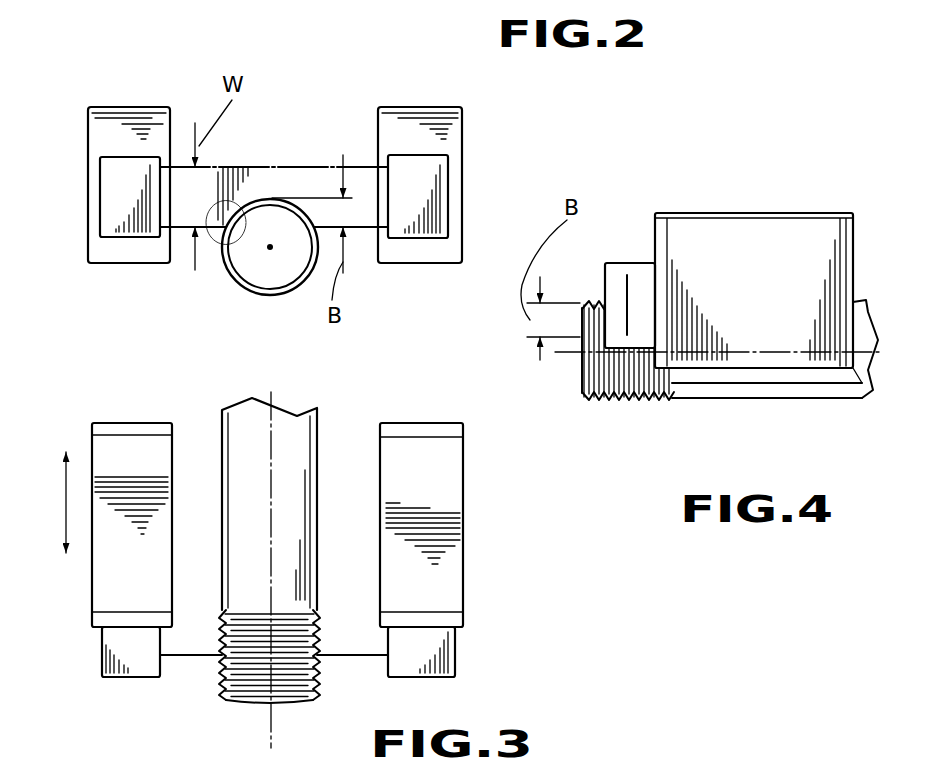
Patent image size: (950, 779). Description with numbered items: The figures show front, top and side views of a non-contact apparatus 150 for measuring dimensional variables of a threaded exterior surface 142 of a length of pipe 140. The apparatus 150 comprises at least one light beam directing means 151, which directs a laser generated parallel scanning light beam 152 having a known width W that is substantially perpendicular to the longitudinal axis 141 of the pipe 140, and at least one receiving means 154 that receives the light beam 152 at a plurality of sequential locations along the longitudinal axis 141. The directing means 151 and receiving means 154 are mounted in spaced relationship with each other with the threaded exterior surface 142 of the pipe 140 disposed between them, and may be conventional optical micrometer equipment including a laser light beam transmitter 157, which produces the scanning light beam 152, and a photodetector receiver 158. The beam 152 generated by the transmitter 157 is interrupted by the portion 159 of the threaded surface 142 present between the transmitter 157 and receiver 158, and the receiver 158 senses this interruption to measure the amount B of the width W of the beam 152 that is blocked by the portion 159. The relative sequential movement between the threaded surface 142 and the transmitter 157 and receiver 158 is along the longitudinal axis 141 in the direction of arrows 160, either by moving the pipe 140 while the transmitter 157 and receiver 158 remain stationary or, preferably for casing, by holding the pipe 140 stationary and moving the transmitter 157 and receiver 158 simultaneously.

In FIG. 2, the length of pipe 140 is at (292, 293).
In FIG. 3, the length of pipe 140 is at (318, 448).
In FIG. 4, the length of pipe 140 is at (740, 384).
In FIG. 2, the longitudinal axis 141 is at (270, 250).
In FIG. 3, the longitudinal axis 141 is at (271, 737).
In FIG. 4, the longitudinal axis 141 is at (566, 353).
In FIG. 4, the threaded exterior surface 142 is at (628, 400).
In FIG. 2, the apparatus 150 is at (406, 88).
In FIG. 2, the light beam directing means 151 is at (443, 192).
In FIG. 3, the light beam directing means 151 is at (455, 646).
In FIG. 4, the light beam directing means 151 is at (637, 262).
In FIG. 2, the parallel scanning light beam 152 is at (296, 163).
In FIG. 3, the parallel scanning light beam 152 is at (348, 652).
In FIG. 2, the receiving means 154 is at (98, 226).
In FIG. 3, the receiving means 154 is at (113, 643).
In FIG. 2, the laser light beam transmitter 157 is at (464, 105).
In FIG. 3, the laser light beam transmitter 157 is at (458, 498).
In FIG. 4, the laser light beam transmitter 157 is at (746, 212).
In FIG. 2, the photodetector receiver 158 is at (88, 104).
In FIG. 3, the photodetector receiver 158 is at (161, 476).
In FIG. 2, the portion of threaded surface 159 is at (246, 224).
In FIG. 3, the portion of threaded surface 159 is at (247, 662).
In FIG. 3, the arrows 160 is at (62, 512).